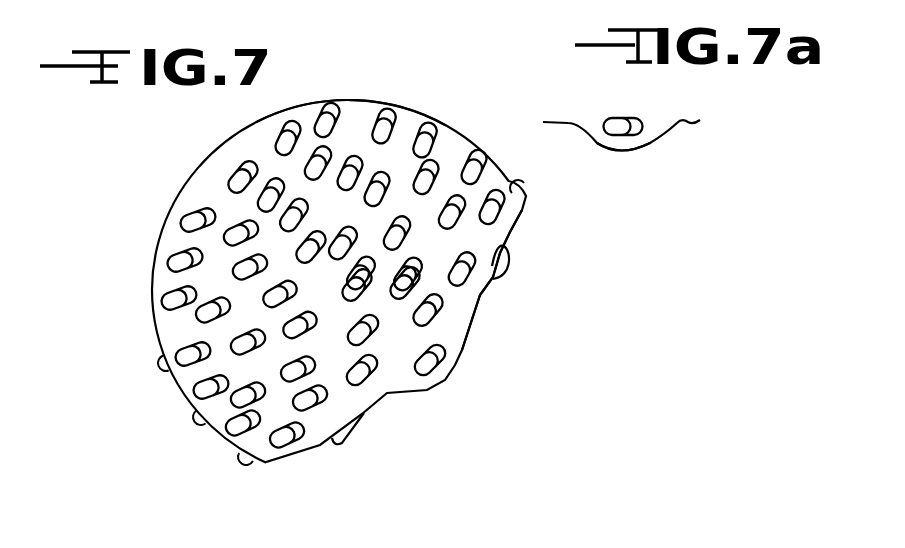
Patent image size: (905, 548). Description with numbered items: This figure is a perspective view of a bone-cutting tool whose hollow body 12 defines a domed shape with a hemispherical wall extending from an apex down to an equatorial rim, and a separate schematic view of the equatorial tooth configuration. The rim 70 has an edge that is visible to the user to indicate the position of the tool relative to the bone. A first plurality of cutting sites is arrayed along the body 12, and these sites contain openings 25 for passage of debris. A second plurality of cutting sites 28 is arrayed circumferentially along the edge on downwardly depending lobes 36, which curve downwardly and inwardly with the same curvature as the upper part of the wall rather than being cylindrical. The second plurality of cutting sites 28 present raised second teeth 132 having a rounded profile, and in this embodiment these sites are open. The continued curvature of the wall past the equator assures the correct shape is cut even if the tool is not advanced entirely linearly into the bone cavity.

In FIG. 7, the hollow body 12 is at (413, 105).
In FIG. 7, the openings 25 is at (389, 103).
In FIG. 7, the second plurality of cutting sites 28 is at (444, 353).
In FIG. 7, the lobes 36 is at (502, 281).
In FIG. 7A, the lobes 36 is at (612, 147).
In FIG. 7, the rim 70 is at (510, 240).
In FIG. 7A, the rim 70 is at (697, 118).
In FIG. 7, the rounded second teeth 132 is at (175, 262).
In FIG. 7A, the rounded second teeth 132 is at (614, 112).